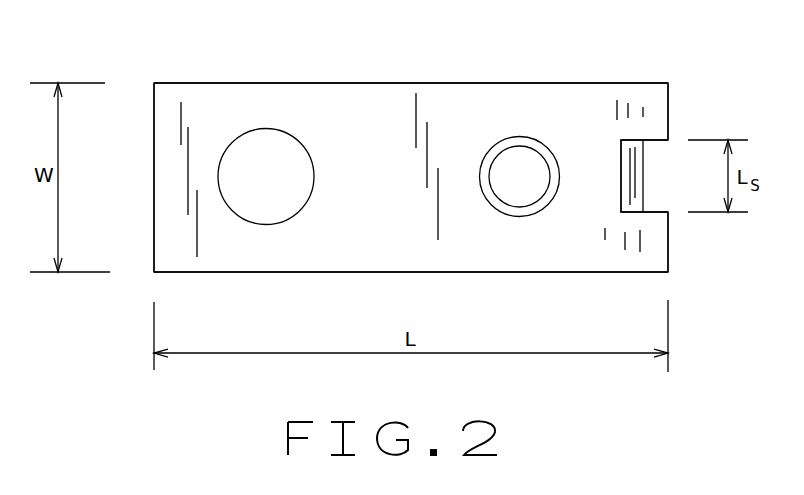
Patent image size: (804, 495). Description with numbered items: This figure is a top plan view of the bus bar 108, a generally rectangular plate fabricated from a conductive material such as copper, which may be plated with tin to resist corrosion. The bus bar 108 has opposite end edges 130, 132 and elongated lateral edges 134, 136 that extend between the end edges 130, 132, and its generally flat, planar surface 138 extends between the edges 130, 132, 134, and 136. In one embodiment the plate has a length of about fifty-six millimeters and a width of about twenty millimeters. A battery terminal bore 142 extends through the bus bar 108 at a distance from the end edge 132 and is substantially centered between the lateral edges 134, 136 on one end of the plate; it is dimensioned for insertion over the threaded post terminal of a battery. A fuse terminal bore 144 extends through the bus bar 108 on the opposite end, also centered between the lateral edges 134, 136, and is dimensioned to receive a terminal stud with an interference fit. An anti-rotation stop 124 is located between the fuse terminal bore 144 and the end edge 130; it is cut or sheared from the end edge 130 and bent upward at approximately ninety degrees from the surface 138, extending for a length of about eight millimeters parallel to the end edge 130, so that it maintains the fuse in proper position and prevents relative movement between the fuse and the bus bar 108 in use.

The bus bar 108 is at (398, 100).
The anti-rotation stop 124 is at (630, 181).
The end edge 130 is at (668, 112).
The end edge 132 is at (154, 190).
The lateral edge 134 is at (388, 272).
The lateral edge 136 is at (488, 83).
The surface 138 is at (338, 222).
The battery terminal bore 142 is at (285, 147).
The fuse terminal bore 144 is at (532, 172).